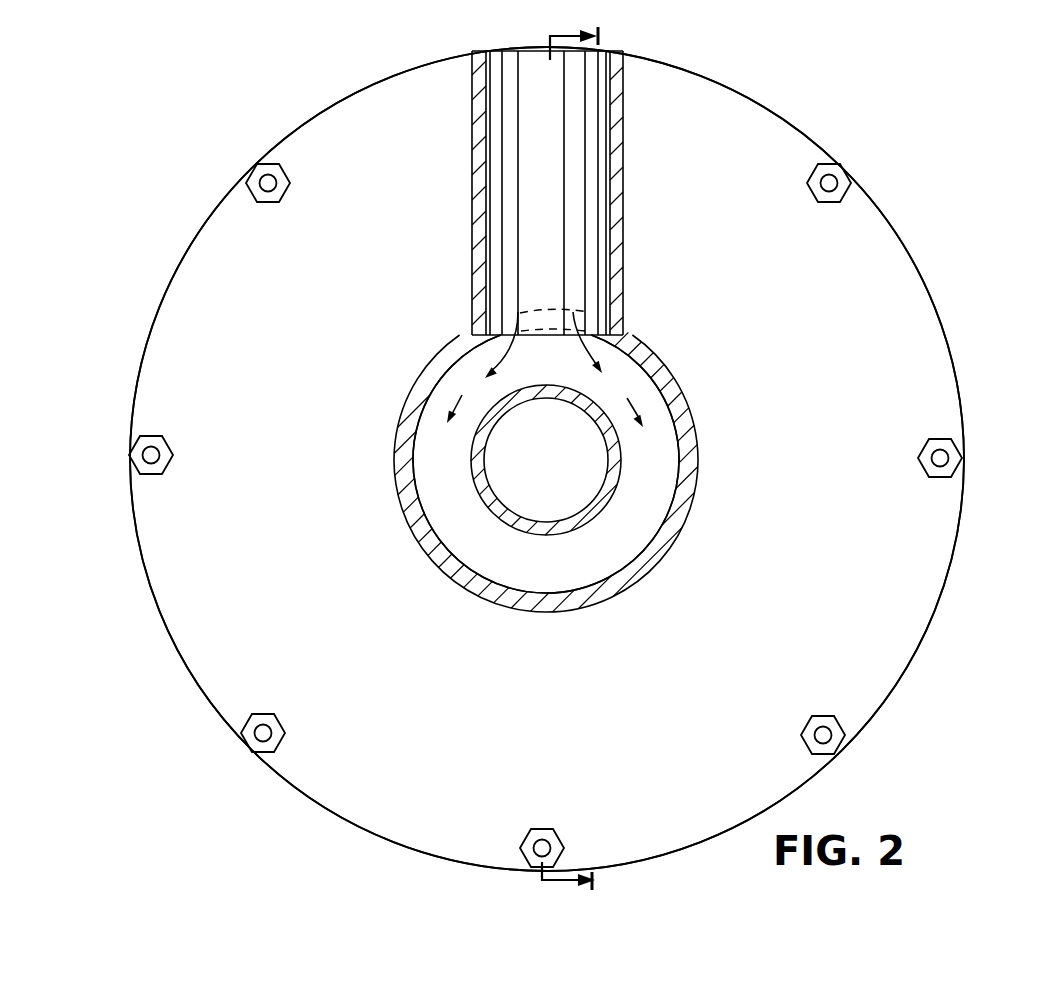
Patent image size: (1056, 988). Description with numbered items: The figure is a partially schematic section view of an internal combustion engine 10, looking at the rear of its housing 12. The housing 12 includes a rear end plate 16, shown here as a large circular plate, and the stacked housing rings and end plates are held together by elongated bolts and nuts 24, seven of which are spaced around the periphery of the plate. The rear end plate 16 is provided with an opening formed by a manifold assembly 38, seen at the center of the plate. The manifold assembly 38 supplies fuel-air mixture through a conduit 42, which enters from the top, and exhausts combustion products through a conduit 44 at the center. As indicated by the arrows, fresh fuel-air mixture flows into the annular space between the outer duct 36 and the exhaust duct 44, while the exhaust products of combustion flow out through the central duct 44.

The internal combustion engine 10 is at (558, 458).
The housing 12 is at (977, 497).
The rear end plate 16 is at (883, 582).
The nuts 24 is at (849, 174).
The duct 36 is at (686, 524).
The manifold assembly 38 is at (434, 584).
The conduit 42 is at (623, 184).
The conduit 44 is at (612, 452).